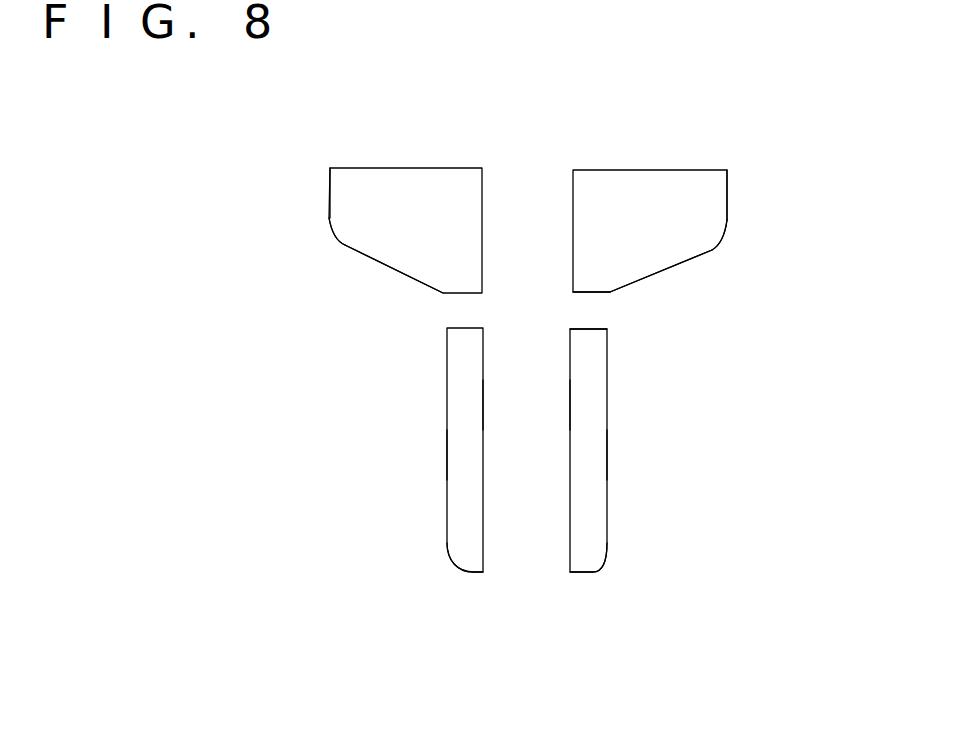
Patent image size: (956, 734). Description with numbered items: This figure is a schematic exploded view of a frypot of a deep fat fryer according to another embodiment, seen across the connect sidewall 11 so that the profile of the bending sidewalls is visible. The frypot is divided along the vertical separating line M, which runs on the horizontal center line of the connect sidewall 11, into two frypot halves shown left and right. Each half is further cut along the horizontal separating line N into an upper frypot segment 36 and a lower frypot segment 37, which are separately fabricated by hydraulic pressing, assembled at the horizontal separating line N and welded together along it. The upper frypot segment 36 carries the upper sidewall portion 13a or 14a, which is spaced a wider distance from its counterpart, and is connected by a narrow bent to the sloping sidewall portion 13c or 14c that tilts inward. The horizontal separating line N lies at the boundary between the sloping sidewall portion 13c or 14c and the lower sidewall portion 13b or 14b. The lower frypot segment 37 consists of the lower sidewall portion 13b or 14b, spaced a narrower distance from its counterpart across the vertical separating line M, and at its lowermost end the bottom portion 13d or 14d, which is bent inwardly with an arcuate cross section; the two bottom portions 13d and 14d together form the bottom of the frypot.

The connect sidewall 11 is at (437, 193).
The upper frypot segment 36 is at (330, 197).
The upper sidewall portion 13a is at (329, 218).
The sloping sidewall portion 13c is at (393, 270).
The upper sidewall portion 14a is at (723, 223).
The sloping sidewall portion 14c is at (663, 272).
The horizontal separating line N is at (592, 293).
The lower sidewall portion 13b is at (445, 403).
The lower sidewall portion 14b is at (608, 403).
The vertical separating line M is at (570, 407).
The lower frypot segment 37 is at (445, 457).
The bottom portion 13d is at (460, 568).
The bottom portion 14d is at (593, 568).